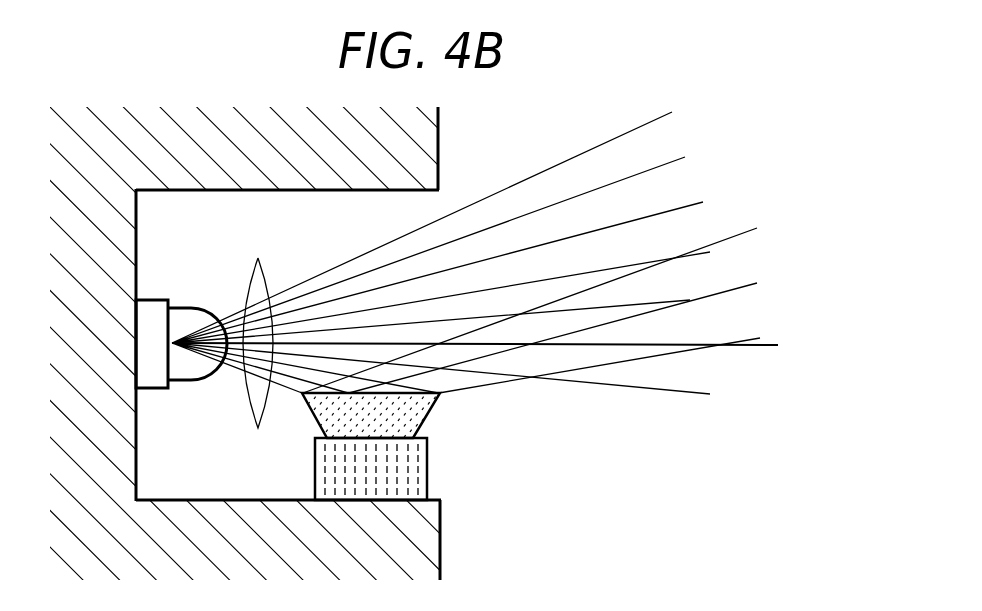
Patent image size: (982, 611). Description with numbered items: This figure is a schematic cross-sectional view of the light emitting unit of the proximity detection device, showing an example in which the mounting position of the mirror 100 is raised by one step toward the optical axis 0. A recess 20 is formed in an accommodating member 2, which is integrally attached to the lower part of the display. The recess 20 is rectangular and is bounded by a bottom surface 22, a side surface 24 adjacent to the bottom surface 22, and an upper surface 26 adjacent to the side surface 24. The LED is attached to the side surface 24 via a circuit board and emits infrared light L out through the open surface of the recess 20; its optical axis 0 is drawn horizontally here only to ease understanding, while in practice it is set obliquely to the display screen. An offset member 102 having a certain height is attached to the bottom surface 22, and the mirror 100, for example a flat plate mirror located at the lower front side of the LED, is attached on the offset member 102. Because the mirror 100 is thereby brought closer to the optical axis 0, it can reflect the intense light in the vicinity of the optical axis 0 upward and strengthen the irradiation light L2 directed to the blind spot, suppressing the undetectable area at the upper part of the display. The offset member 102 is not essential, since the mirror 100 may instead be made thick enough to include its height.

The accommodating member 2 is at (439, 146).
The recess 20 is at (345, 237).
The bottom surface 22 is at (212, 500).
The side surface 24 is at (137, 438).
The upper surface 26 is at (205, 191).
The element LED is at (183, 307).
The infrared light L is at (258, 259).
The optical axis 0 is at (484, 253).
The irradiation light L2 is at (757, 218).
The mirror 100 is at (430, 413).
The offset member 102 is at (428, 470).